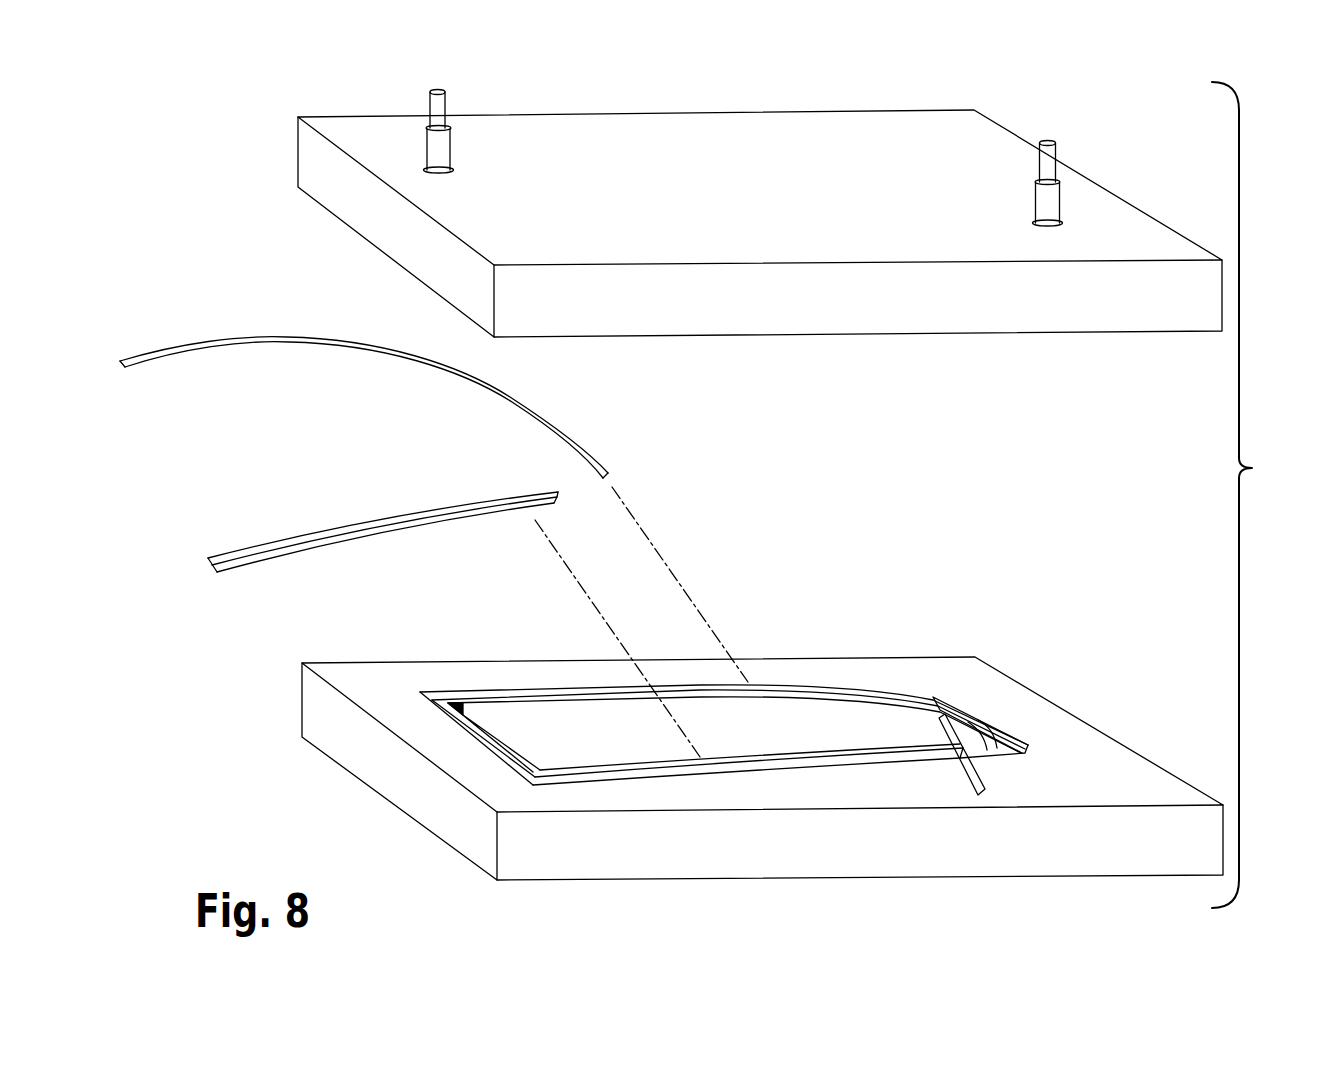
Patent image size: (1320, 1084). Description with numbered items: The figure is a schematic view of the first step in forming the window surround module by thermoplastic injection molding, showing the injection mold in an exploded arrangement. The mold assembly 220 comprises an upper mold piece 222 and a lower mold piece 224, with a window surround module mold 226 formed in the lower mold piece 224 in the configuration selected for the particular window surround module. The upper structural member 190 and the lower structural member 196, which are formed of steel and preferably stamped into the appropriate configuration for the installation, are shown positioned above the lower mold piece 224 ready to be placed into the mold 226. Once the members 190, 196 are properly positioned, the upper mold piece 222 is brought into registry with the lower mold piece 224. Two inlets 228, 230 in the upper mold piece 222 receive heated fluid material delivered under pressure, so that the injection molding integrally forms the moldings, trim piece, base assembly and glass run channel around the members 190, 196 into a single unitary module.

The mold assembly 220 is at (1254, 495).
The upper mold piece 222 is at (920, 153).
The lower mold piece 224 is at (1043, 847).
The window surround module mold 226 is at (880, 692).
The inlet 228 is at (437, 110).
The inlet 230 is at (1050, 164).
The upper structural member 190 is at (227, 347).
The lower structural member 196 is at (267, 560).